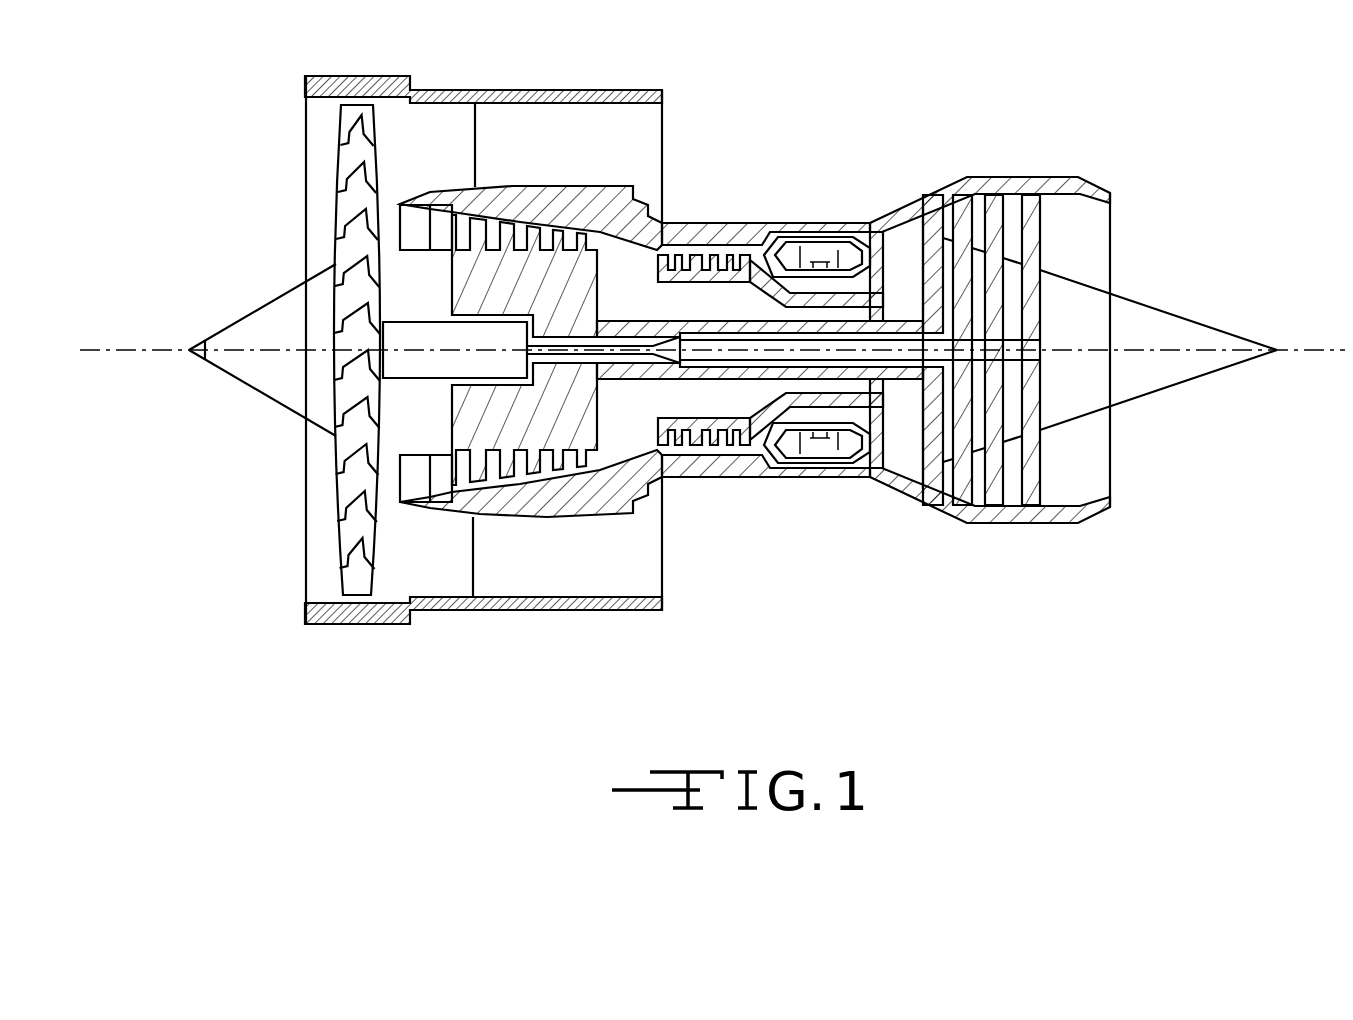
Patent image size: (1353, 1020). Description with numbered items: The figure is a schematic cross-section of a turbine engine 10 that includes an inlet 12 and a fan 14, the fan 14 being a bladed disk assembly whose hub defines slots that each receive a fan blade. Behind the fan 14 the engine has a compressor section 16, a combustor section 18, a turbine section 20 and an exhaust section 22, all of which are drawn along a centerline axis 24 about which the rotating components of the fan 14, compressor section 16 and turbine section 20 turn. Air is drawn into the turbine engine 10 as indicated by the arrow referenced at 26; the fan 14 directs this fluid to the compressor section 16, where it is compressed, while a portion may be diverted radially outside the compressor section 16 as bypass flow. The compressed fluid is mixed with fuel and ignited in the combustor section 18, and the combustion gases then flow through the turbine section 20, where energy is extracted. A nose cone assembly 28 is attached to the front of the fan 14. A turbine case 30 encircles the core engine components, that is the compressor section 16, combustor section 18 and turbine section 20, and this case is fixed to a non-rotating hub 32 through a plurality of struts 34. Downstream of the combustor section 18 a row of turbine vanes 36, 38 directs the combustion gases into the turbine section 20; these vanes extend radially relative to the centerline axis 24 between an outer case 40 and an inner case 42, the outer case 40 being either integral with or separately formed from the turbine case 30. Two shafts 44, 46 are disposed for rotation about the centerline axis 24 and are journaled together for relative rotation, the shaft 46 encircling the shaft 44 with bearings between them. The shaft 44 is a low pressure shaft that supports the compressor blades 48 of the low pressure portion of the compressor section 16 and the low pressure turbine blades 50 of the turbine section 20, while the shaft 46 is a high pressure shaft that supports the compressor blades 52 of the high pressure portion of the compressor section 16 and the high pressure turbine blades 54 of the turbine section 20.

The turbine engine 10 is at (712, 369).
The inlet 12 is at (300, 590).
The fan 14 is at (352, 148).
The compressor section 16 is at (587, 502).
The combustor section 18 is at (817, 457).
The turbine section 20 is at (985, 533).
The exhaust section 22 is at (1112, 468).
The centerline axis 24 is at (113, 350).
The arrow indicating fluid flow 26 is at (200, 222).
The nose cone assembly 28 is at (228, 405).
The turbine case 30 is at (458, 200).
The non-rotating hub 32 is at (424, 291).
The struts 34 is at (415, 213).
The turbine vane 36 is at (908, 232).
The turbine vane 38 is at (920, 455).
The outer case 40 is at (887, 218).
The inner case 42 is at (906, 430).
The low pressure shaft 44 is at (655, 482).
The high pressure shaft 46 is at (774, 452).
The compressor blades 48 is at (518, 505).
The low pressure turbine blades 50 is at (930, 205).
The compressor blades 52 is at (708, 238).
The high pressure turbine blades 54 is at (870, 483).